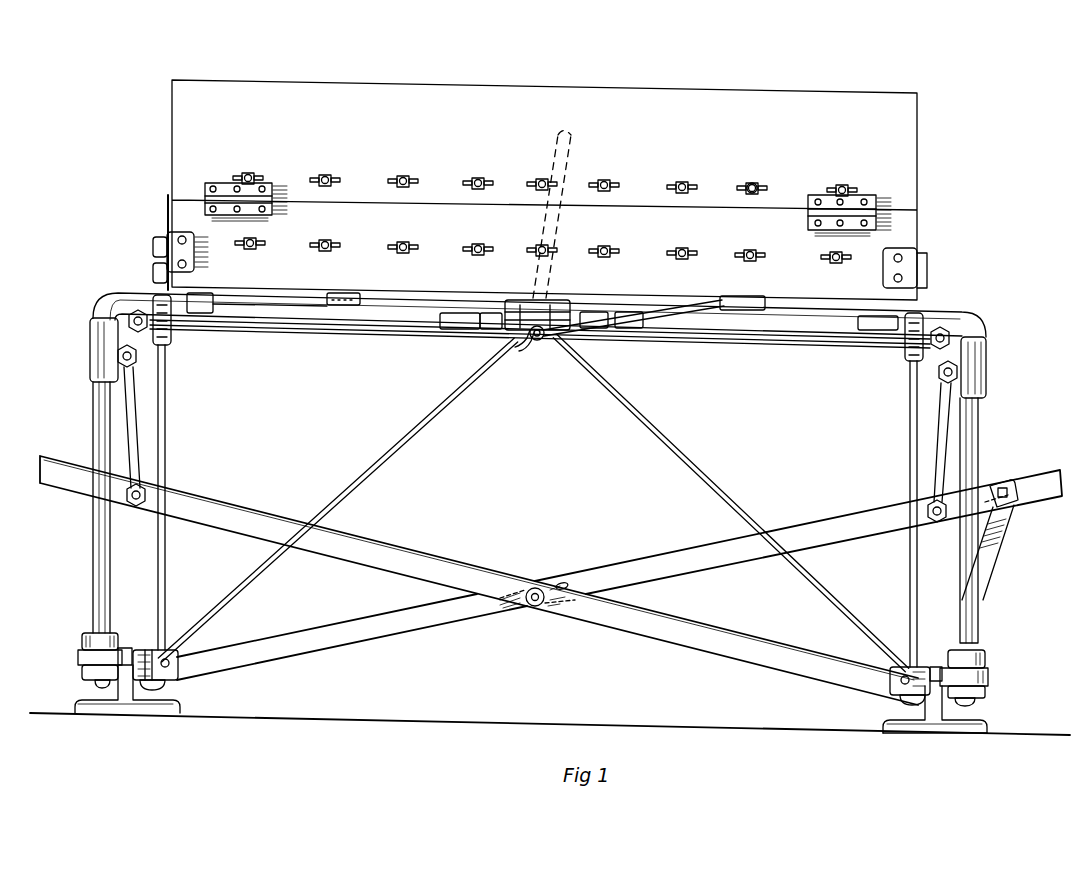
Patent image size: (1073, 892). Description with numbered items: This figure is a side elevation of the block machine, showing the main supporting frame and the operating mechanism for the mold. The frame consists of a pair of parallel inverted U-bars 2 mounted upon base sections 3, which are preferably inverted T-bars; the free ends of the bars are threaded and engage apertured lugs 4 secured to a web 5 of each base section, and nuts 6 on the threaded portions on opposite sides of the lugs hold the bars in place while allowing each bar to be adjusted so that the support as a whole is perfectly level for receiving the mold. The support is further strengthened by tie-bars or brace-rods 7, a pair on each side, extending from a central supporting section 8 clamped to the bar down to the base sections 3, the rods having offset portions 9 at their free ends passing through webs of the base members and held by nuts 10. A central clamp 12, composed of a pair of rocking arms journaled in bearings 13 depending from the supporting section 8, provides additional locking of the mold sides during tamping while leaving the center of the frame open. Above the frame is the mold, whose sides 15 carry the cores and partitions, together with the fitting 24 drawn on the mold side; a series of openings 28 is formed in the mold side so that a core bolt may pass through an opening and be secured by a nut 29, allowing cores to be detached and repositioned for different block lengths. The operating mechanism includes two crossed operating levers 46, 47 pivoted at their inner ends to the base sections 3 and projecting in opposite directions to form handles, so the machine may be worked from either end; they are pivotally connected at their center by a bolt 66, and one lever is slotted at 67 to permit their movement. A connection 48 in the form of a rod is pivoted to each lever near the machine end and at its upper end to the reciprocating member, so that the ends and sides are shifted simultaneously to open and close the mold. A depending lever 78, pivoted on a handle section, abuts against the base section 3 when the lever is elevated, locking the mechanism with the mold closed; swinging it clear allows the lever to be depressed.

The inverted U-bar 2 is at (980, 457).
The base section 3 is at (988, 727).
The apertured lug 4 is at (988, 680).
The web 5 is at (123, 683).
The nut 6 is at (985, 660).
The tie-bar or brace-rod 7 is at (664, 439).
The central supporting section 8 is at (529, 340).
The offset portion 9 is at (165, 655).
The nut 10 is at (140, 652).
The central clamp 12 is at (592, 327).
The bearing 13 is at (541, 337).
The mold side 15 is at (565, 190).
The hinge 24 is at (858, 197).
The opening 28 is at (745, 184).
The nut 29 is at (758, 184).
The operating lever 46 is at (646, 561).
The operating lever 47 is at (650, 636).
The connection rod 48 is at (912, 434).
The bolt 66 is at (535, 608).
The slot 67 is at (566, 582).
The depending lever 78 is at (996, 546).